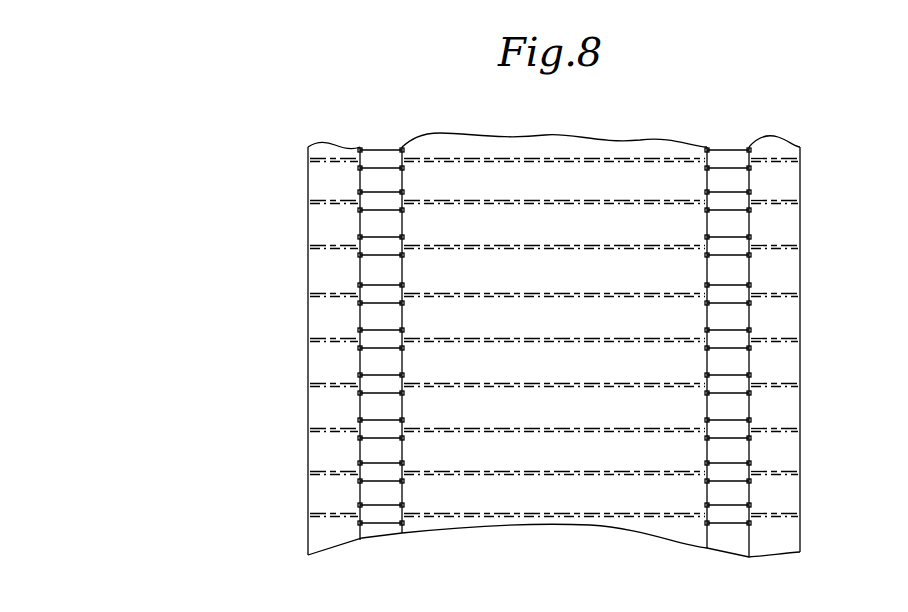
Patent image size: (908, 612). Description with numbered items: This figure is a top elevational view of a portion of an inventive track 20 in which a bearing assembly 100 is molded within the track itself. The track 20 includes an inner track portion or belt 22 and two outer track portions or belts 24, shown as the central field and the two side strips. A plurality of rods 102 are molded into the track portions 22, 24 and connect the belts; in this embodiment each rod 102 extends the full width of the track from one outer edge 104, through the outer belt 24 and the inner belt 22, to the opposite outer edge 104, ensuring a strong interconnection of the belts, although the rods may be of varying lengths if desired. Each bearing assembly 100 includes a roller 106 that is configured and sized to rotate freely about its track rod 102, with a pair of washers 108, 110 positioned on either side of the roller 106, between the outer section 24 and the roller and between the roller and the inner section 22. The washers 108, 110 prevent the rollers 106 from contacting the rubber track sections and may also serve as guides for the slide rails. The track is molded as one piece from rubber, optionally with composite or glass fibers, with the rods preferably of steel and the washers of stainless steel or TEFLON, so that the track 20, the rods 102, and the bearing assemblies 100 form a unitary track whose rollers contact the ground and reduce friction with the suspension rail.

The track 20 is at (320, 136).
The inner track portion 22 is at (618, 524).
The outer track portion 24 is at (308, 498).
The bearing assembly 100 is at (741, 134).
The rod 102 is at (545, 152).
The outer edge 104 is at (308, 215).
The roller 106 is at (376, 155).
The washer 108 is at (362, 376).
The washer 110 is at (403, 328).